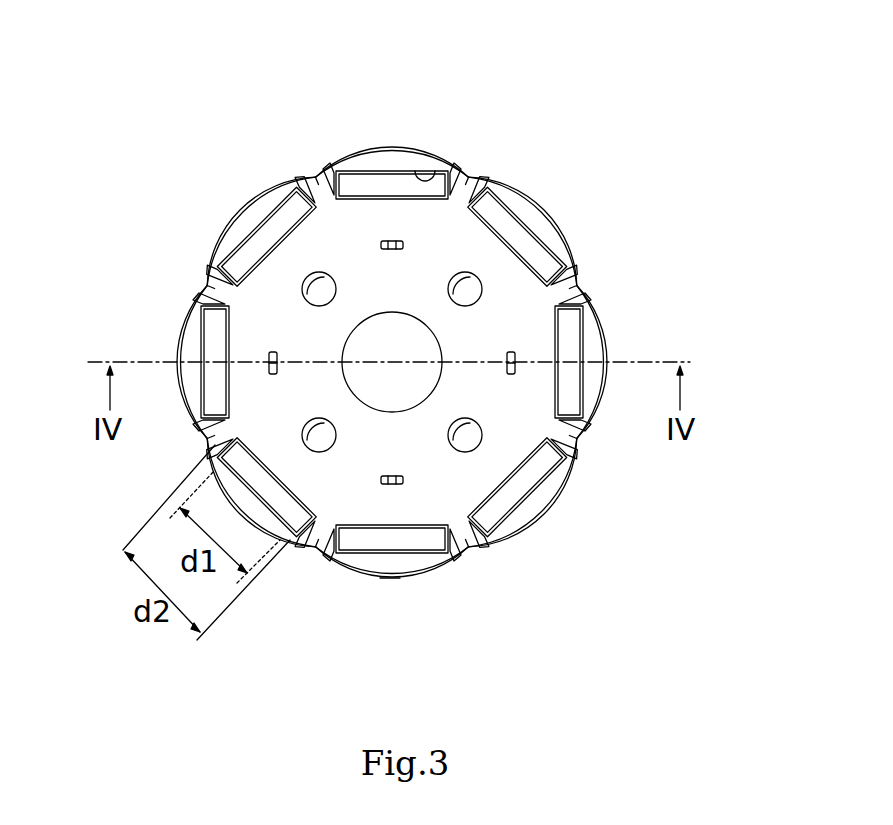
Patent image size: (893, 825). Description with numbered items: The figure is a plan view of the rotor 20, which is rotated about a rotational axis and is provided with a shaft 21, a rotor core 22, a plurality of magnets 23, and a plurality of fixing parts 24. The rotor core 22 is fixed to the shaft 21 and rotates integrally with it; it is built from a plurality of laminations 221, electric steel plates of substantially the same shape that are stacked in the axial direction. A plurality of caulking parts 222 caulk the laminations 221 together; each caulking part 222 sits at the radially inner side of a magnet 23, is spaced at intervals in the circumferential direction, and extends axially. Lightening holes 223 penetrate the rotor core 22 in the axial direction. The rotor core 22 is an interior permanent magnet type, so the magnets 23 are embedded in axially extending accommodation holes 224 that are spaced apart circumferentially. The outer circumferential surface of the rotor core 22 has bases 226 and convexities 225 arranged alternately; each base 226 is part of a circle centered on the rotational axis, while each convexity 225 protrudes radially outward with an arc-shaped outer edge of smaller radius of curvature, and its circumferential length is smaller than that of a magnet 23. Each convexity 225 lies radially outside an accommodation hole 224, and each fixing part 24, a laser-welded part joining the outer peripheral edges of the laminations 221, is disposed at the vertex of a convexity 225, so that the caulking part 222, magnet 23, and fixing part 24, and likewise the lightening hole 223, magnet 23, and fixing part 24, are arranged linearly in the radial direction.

The rotor 20 is at (398, 352).
The shaft 21 is at (410, 350).
The rotor core 22 is at (444, 375).
The lamination 221 is at (340, 230).
The caulking part 222 is at (396, 492).
The lightening hole 223 is at (305, 300).
The accommodation hole 224 is at (426, 184).
The convexity 225 is at (553, 497).
The base 226 is at (578, 446).
The magnet 23 is at (428, 542).
The fixing part 24 is at (400, 580).